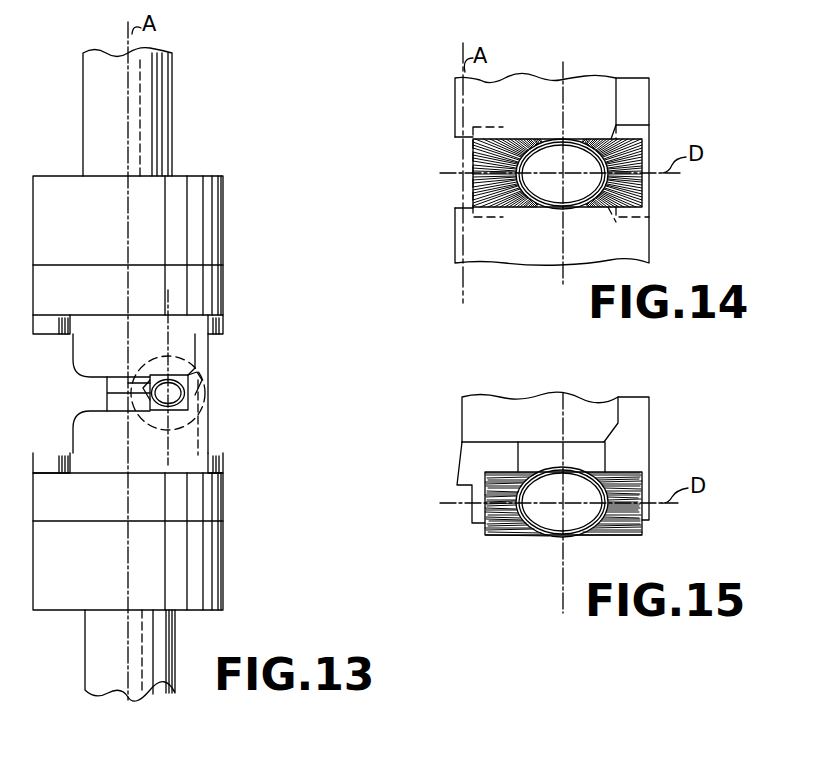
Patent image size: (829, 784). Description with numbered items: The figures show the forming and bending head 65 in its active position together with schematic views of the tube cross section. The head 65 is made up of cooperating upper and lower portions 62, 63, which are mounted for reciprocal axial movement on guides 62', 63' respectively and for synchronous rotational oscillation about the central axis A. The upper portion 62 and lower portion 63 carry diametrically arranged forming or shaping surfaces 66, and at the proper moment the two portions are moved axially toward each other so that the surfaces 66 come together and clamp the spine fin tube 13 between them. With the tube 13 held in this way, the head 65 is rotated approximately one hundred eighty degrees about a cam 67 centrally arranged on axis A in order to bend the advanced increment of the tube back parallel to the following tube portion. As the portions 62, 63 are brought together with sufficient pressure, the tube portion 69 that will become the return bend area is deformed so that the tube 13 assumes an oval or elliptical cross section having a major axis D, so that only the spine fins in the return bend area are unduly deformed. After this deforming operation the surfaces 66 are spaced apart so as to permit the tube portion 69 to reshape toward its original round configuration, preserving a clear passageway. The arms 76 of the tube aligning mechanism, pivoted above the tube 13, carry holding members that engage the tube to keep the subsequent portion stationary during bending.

In FIG. 14, the spine fin tube 13 is at (580, 196).
In FIG. 15, the spine fin tube 13 is at (538, 518).
In FIG. 13, the upper portion 62 is at (153, 245).
In FIG. 13, the guide 62' is at (160, 112).
In FIG. 13, the lower portion 63 is at (161, 525).
In FIG. 13, the guide 63' is at (181, 649).
In FIG. 13, the forming and bending head 65 is at (238, 334).
In FIG. 13, the forming or shaping surfaces 66 is at (107, 386).
In FIG. 15, the forming or shaping surfaces 66 is at (535, 443).
In FIG. 13, the cam 67 is at (78, 360).
In FIG. 14, the cam 67 is at (616, 100).
In FIG. 13, the tube portion 69 is at (208, 385).
In FIG. 14, the tube portion 69 is at (598, 113).
In FIG. 15, the tube portion 69 is at (567, 470).
In FIG. 15, the arms 76 is at (618, 412).